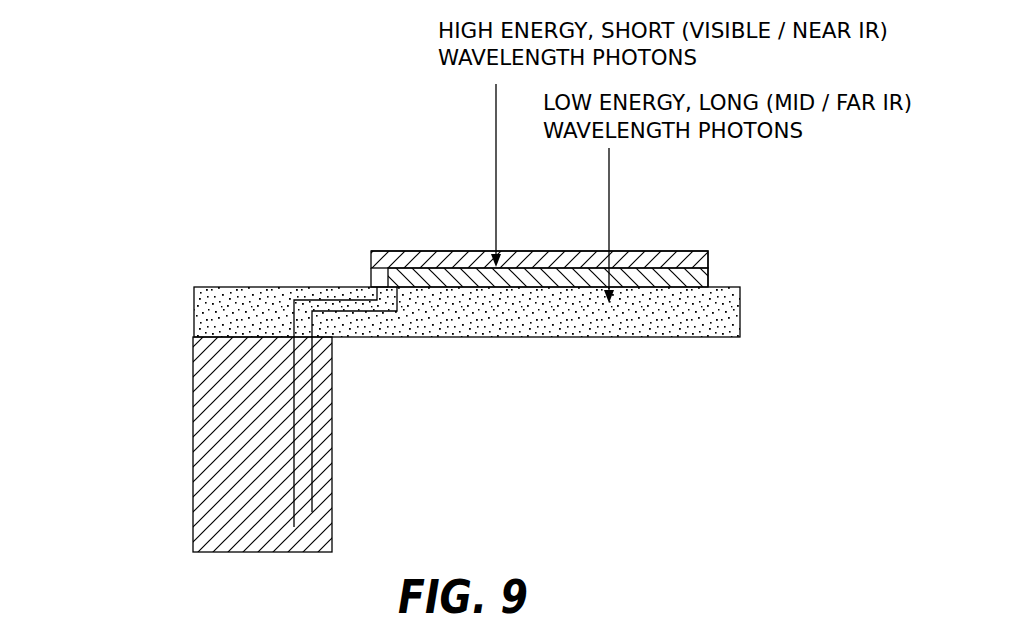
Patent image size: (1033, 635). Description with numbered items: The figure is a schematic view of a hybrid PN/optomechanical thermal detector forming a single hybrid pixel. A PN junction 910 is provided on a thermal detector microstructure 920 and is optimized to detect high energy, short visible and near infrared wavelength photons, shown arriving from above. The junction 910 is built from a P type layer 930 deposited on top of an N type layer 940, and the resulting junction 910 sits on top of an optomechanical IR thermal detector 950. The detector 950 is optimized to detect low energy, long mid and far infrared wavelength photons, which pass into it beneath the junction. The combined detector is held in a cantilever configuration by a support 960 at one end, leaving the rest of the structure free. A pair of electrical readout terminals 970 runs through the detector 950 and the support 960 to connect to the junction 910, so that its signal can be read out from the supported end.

The PN junction 910 is at (370, 267).
The thermal detector microstructure 920 is at (148, 369).
The P type layer 930 is at (707, 252).
The N type layer 940 is at (710, 283).
The optomechanical IR thermal detector 950 is at (538, 338).
The support 960 is at (193, 403).
The electrical readout terminals 970 is at (294, 512).